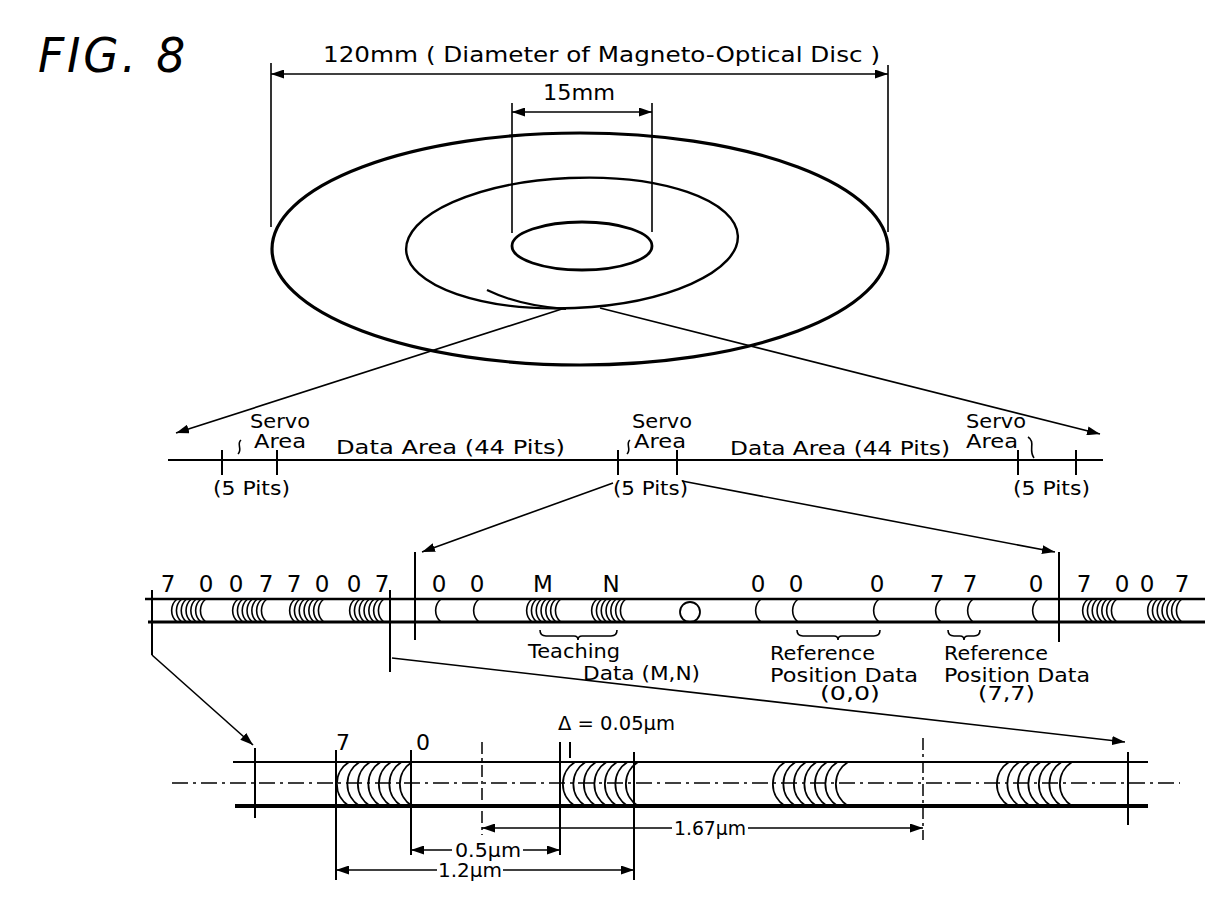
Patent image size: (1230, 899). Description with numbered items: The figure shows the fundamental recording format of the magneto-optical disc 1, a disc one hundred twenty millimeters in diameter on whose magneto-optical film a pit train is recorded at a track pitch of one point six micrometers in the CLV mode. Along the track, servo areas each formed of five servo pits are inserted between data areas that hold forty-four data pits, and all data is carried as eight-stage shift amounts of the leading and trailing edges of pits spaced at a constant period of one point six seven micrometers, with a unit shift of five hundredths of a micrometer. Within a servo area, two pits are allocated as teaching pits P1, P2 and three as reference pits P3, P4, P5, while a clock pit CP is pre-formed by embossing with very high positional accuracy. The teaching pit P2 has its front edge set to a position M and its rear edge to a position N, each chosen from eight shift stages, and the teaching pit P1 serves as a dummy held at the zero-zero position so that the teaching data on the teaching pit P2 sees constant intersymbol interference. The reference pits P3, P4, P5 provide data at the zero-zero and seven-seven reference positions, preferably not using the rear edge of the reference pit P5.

The magneto-optical disc 1 is at (869, 293).
The teaching pit P1 is at (456, 598).
The teaching pit P2 is at (576, 598).
The clock pit CP is at (674, 607).
The reference pit P3 is at (776, 598).
The reference pit P4 is at (903, 598).
The reference pit P5 is at (990, 598).